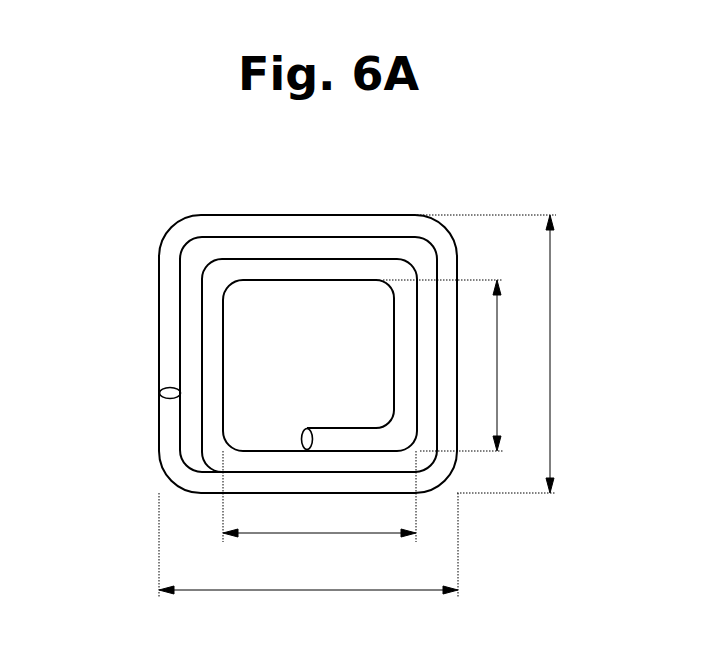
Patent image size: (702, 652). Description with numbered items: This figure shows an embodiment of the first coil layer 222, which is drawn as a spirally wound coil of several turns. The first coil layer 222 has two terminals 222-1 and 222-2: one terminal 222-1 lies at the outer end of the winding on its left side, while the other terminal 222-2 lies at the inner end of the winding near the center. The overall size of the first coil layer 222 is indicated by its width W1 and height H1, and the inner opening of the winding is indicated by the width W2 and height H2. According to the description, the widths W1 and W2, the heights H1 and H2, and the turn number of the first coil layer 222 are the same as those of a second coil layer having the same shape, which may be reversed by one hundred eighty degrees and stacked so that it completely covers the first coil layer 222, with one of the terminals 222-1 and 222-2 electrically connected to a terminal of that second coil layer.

The first coil layer 222 is at (305, 215).
The terminal of first coil layer 222-1 is at (168, 399).
The terminal of first coil layer 222-2 is at (302, 440).
The height H1 is at (502, 354).
The height H2 is at (458, 365).
The width W1 is at (308, 545).
The width W2 is at (319, 496).